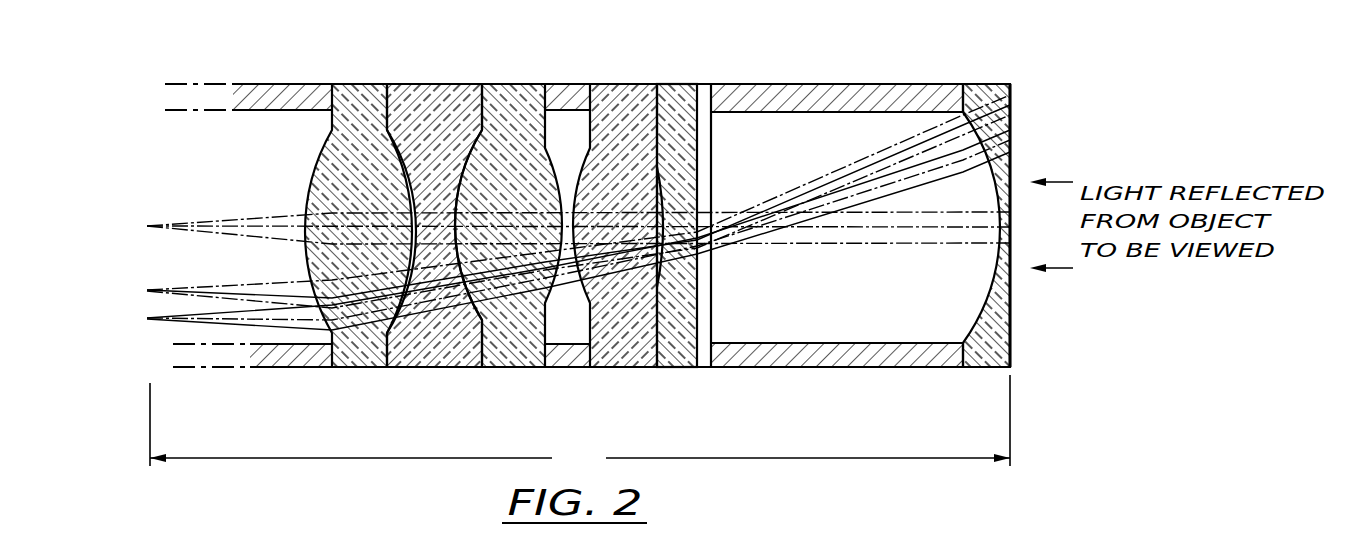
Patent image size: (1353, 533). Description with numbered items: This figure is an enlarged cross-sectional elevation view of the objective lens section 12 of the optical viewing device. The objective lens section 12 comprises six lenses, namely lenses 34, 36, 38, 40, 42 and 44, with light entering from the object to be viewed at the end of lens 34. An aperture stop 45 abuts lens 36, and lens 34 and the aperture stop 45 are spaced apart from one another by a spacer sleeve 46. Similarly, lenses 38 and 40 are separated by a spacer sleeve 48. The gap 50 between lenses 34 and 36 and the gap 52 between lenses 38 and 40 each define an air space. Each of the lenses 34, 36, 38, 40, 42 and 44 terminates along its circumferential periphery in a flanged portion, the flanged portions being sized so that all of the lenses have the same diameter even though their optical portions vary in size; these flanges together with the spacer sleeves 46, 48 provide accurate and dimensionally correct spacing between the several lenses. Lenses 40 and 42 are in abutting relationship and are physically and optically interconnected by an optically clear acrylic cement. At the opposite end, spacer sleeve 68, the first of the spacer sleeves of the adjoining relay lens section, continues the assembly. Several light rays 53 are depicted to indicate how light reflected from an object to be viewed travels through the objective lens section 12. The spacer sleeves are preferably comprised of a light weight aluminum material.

The objective lens section 12 is at (580, 423).
The lens 34 is at (1013, 97).
The lens 36 is at (676, 102).
The lens 38 is at (621, 102).
The lens 40 is at (528, 100).
The lens 42 is at (417, 100).
The lens 44 is at (357, 93).
The aperture stop 45 is at (712, 163).
The spacer sleeve 46 is at (827, 364).
The spacer sleeve 48 is at (577, 368).
The gap 50 is at (866, 304).
The gap 52 is at (580, 331).
The light rays 53 is at (868, 166).
The spacer sleeve 68 is at (270, 368).